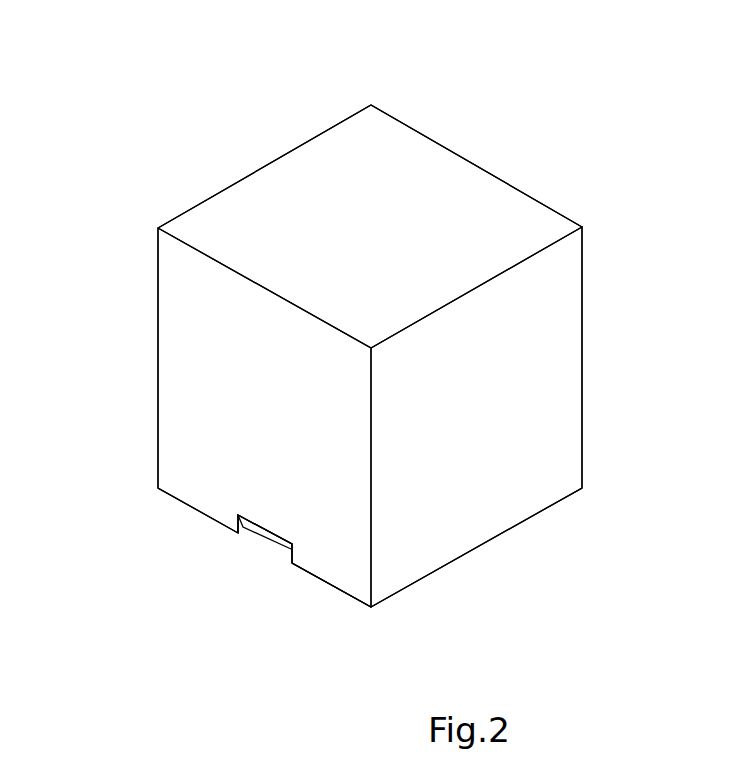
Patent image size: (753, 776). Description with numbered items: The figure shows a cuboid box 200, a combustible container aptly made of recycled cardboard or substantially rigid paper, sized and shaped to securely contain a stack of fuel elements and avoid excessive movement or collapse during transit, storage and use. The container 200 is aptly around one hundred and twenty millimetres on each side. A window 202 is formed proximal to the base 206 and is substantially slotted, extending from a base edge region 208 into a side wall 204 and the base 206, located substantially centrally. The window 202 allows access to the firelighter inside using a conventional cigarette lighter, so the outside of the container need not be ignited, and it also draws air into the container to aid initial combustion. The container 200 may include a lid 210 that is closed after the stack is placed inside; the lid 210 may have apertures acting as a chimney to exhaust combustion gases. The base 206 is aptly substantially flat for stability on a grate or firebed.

The cuboid box 200 is at (223, 137).
The window 202 is at (263, 540).
The side wall 204 is at (227, 424).
The base 206 is at (472, 552).
The base edge region 208 is at (323, 582).
The lid 210 is at (460, 190).